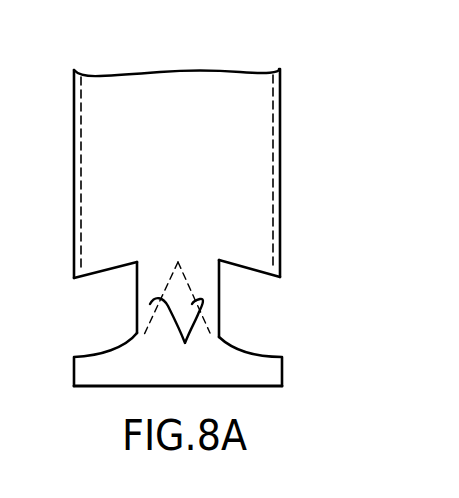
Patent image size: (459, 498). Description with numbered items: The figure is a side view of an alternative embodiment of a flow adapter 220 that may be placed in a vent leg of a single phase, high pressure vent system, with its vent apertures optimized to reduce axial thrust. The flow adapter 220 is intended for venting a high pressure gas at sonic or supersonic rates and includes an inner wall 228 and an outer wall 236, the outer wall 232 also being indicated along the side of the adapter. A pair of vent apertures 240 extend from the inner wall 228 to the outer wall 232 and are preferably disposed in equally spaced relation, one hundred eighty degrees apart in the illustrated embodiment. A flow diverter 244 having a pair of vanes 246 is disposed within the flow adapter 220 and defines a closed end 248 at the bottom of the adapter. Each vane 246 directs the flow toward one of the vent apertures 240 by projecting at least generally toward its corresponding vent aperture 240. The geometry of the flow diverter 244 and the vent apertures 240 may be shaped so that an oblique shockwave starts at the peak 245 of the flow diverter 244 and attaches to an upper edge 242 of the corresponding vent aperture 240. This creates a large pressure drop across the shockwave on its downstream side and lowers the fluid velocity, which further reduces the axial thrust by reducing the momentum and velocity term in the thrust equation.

The outer wall 236 is at (199, 55).
The flow adapter 220 is at (279, 69).
The inner wall 228 is at (274, 172).
The outer wall 232 is at (281, 203).
The upper edge 242 is at (105, 270).
The vent apertures 240 is at (112, 317).
The flow diverter 244 is at (284, 378).
The closed end 248 is at (104, 388).
The peak 245 is at (178, 262).
The vanes 246 is at (176, 337).